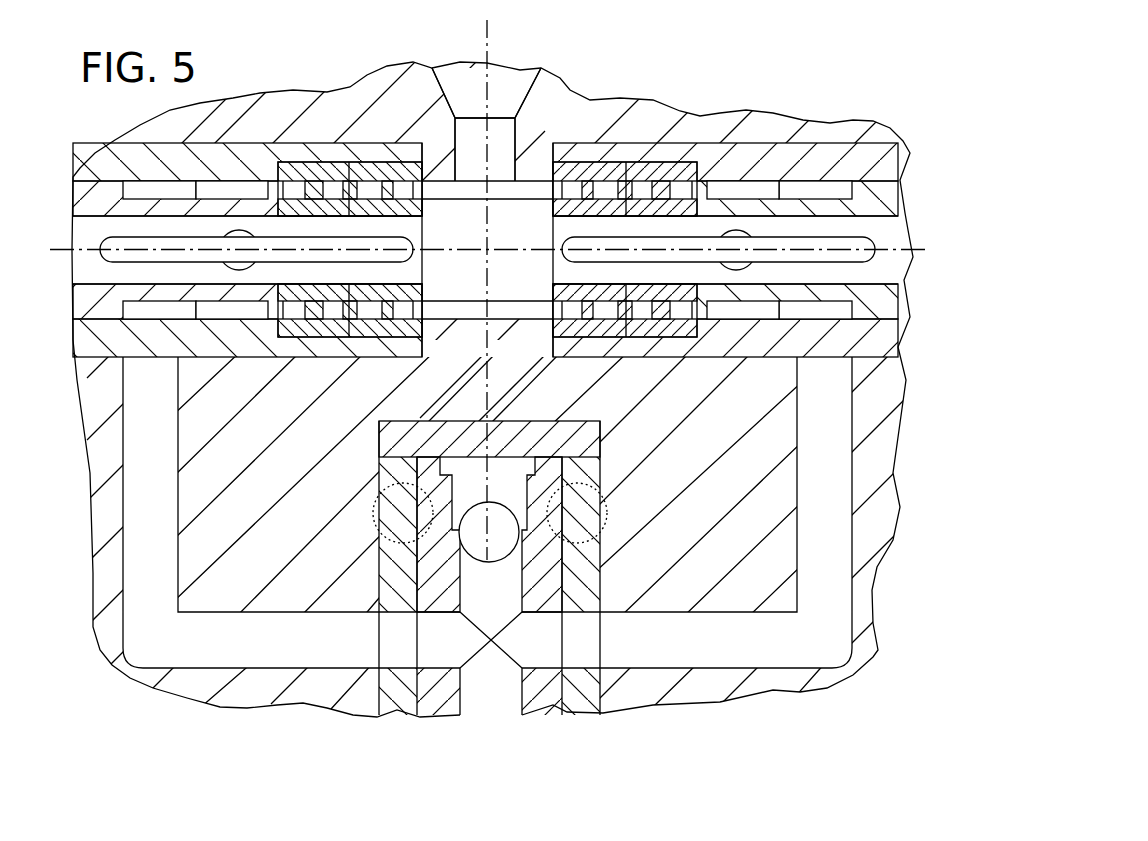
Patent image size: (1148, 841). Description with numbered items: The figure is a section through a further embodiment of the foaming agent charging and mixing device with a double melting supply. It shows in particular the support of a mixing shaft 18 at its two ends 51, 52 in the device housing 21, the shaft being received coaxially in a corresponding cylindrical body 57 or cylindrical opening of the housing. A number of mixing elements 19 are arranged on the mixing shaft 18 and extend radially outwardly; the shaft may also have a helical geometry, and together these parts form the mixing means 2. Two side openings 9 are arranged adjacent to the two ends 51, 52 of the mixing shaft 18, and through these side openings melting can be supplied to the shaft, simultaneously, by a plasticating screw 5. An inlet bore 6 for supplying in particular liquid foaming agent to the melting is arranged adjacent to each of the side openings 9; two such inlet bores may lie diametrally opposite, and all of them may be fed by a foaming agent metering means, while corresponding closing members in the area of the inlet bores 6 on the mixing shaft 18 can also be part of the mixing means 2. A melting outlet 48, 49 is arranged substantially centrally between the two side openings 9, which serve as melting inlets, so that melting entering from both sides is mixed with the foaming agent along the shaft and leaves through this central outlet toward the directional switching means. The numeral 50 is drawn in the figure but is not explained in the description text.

The mixing means 2 is at (914, 97).
The plasticating screw 5 is at (487, 700).
The inlet bore 6 is at (182, 228).
The side opening 9 is at (147, 343).
The mixing shaft 18 is at (233, 190).
The mixing element 19 is at (343, 200).
The device housing 21 is at (588, 108).
The melting outlet 48 is at (508, 88).
The melting outlet 49 is at (486, 124).
The sealing ring groove 50 is at (240, 248).
The end of the mixing shaft 51 is at (92, 228).
The end of the mixing shaft 52 is at (885, 232).
The cylindrical body 57 is at (845, 150).